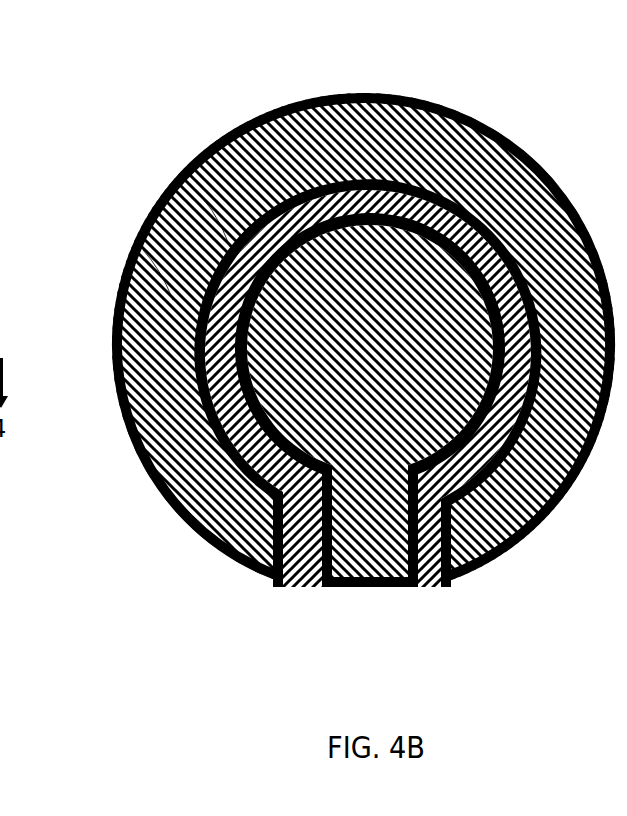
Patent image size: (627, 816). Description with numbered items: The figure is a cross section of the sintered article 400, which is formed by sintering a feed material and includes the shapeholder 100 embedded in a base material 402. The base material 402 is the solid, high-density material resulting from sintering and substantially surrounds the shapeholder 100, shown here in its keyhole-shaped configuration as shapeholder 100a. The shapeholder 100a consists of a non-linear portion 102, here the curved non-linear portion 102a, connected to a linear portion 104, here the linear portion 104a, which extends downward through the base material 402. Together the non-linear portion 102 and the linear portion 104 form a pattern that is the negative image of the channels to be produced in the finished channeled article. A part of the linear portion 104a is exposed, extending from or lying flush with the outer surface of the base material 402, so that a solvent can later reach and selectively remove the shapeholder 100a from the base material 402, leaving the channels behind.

The sintered article 400 is at (311, 344).
The shapeholder 100 is at (311, 347).
The shapeholder 100a is at (133, 245).
The non-linear portion 102 is at (327, 337).
The non-linear portion 102a is at (182, 177).
The linear portion 104 is at (343, 423).
The linear portion 104a is at (427, 588).
The base material 402 is at (173, 407).